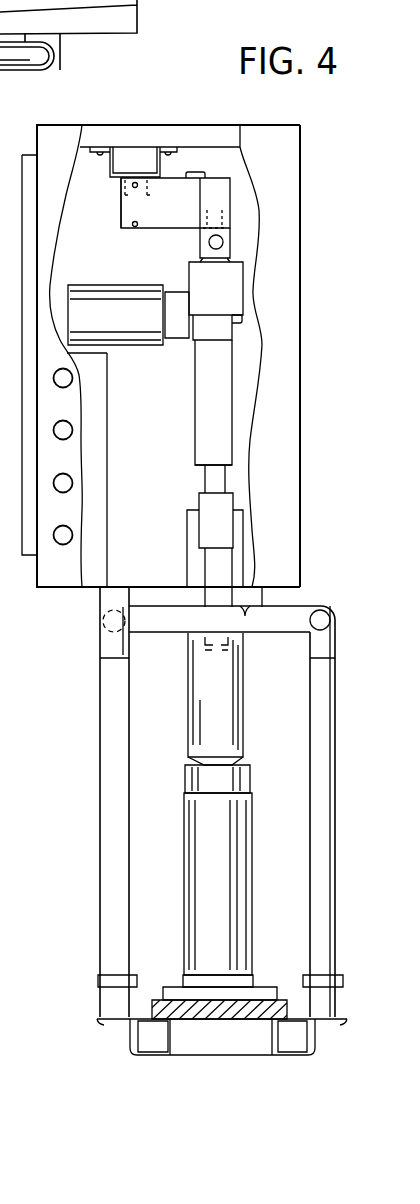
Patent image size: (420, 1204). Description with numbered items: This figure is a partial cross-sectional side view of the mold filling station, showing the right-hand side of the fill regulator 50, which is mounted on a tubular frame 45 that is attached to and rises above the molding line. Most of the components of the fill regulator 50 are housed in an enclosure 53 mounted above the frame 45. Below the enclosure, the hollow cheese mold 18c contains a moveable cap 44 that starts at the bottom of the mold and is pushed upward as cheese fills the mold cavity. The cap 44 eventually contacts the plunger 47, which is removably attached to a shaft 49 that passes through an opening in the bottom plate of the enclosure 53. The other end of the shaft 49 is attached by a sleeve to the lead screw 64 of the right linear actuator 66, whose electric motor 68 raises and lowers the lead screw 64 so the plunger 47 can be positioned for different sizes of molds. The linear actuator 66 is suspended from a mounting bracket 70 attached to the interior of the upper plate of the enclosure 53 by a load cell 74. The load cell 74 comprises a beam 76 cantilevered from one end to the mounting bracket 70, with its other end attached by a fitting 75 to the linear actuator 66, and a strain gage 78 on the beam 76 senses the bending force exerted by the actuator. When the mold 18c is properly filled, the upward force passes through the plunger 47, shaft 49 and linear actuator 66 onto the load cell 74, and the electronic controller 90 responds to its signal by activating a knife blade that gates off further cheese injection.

The fill regulator 50 is at (305, 246).
The enclosure 53 is at (300, 352).
The electronic controller 90 is at (98, 452).
The mounting bracket 70 is at (125, 167).
The load cell 74 is at (118, 211).
The beam 76 is at (165, 220).
The strain gage 78 is at (195, 171).
The fitting 75 is at (230, 240).
The electric motor 68 is at (148, 298).
The right linear actuator 66 is at (212, 361).
The lead screw 64 is at (208, 478).
The shaft 49 is at (212, 597).
The tubular frame 45 is at (107, 808).
The plunger 47 is at (200, 703).
The moveable cap 44 is at (192, 782).
The hollow cheese mold 18c is at (183, 863).